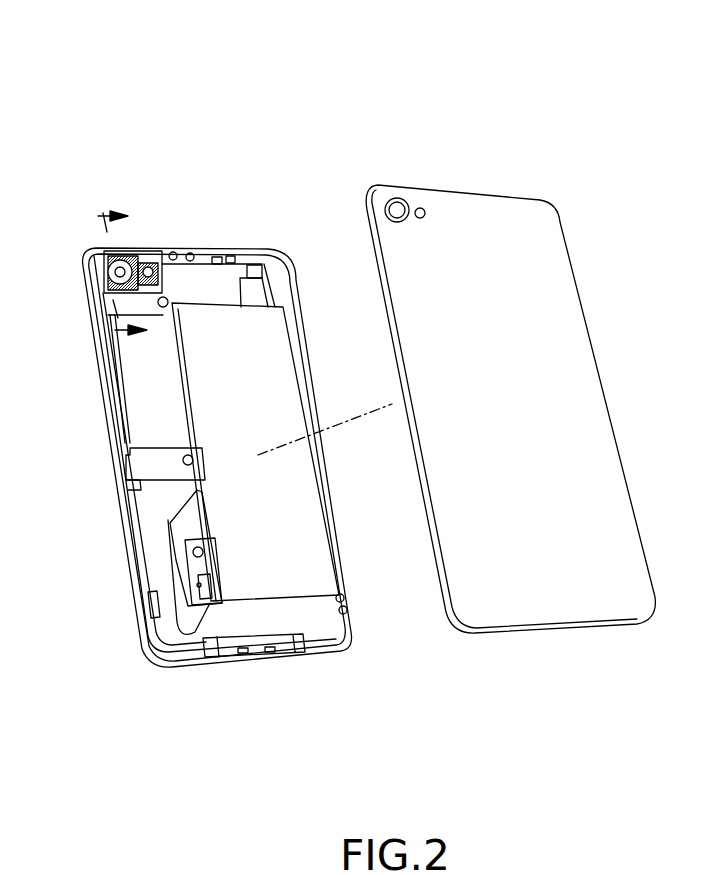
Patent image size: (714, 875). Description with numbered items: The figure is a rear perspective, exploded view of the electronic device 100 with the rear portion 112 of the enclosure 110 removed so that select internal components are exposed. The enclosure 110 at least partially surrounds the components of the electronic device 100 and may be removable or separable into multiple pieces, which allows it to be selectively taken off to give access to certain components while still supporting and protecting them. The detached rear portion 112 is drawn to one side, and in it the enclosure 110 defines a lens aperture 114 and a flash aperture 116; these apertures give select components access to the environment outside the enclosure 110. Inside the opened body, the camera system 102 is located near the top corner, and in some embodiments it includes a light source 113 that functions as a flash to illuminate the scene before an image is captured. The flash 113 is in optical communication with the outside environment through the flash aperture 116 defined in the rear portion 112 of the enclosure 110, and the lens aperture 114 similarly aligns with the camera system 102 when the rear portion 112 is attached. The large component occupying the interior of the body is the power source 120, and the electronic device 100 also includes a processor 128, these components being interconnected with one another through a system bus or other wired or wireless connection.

The electronic device 100 is at (233, 108).
The camera system 102 is at (96, 252).
The enclosure 110 is at (163, 672).
The rear portion 112 is at (552, 218).
The light source 113 is at (150, 266).
The lens aperture 114 is at (409, 198).
The flash aperture 116 is at (427, 212).
The power source 120 is at (267, 328).
The processor 128 is at (135, 407).